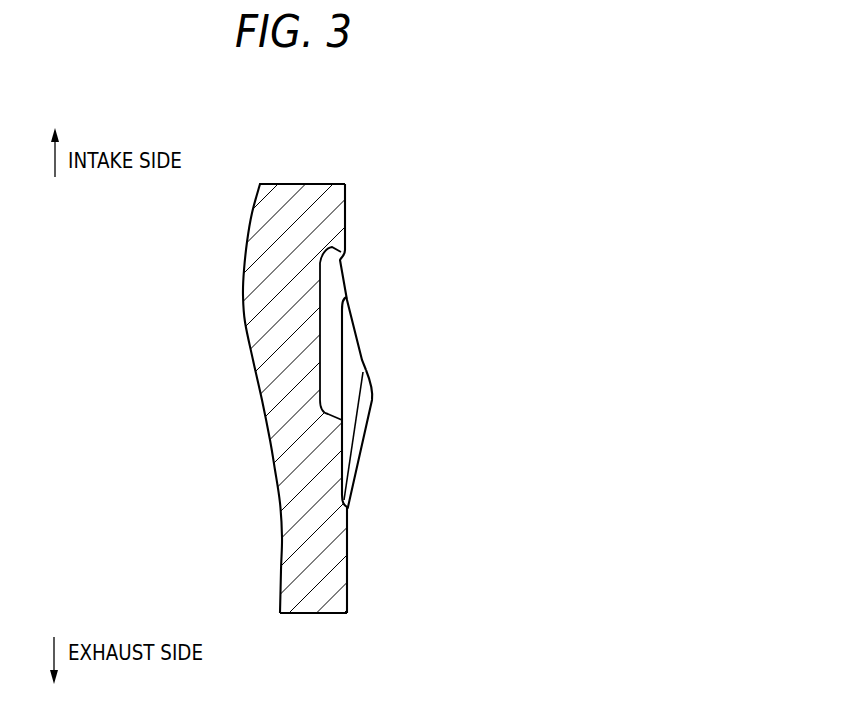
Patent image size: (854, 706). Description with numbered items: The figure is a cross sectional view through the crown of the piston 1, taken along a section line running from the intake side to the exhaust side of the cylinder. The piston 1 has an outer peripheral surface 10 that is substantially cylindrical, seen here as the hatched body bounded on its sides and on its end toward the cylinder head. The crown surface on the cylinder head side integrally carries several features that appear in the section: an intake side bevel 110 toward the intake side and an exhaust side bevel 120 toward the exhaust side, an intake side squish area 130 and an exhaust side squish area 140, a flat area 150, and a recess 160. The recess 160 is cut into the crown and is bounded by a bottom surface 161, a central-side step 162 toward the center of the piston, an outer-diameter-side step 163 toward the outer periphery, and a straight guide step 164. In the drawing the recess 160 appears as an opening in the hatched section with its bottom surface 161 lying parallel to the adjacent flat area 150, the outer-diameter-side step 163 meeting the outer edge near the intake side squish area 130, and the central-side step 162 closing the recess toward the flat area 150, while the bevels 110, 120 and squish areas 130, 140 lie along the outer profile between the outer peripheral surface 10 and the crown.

The piston 1 is at (219, 161).
The outer peripheral surface 10 is at (304, 184).
The intake side bevel 110 is at (366, 367).
The exhaust side bevel 120 is at (365, 442).
The intake side squish area 130 is at (345, 205).
The exhaust side squish area 140 is at (347, 591).
The flat area 150 is at (343, 392).
The recess 160 is at (333, 305).
The bottom surface 161 is at (320, 327).
The central-side step 162 is at (328, 412).
The outer-diameter-side step 163 is at (332, 247).
The straight guide step 164 is at (335, 347).